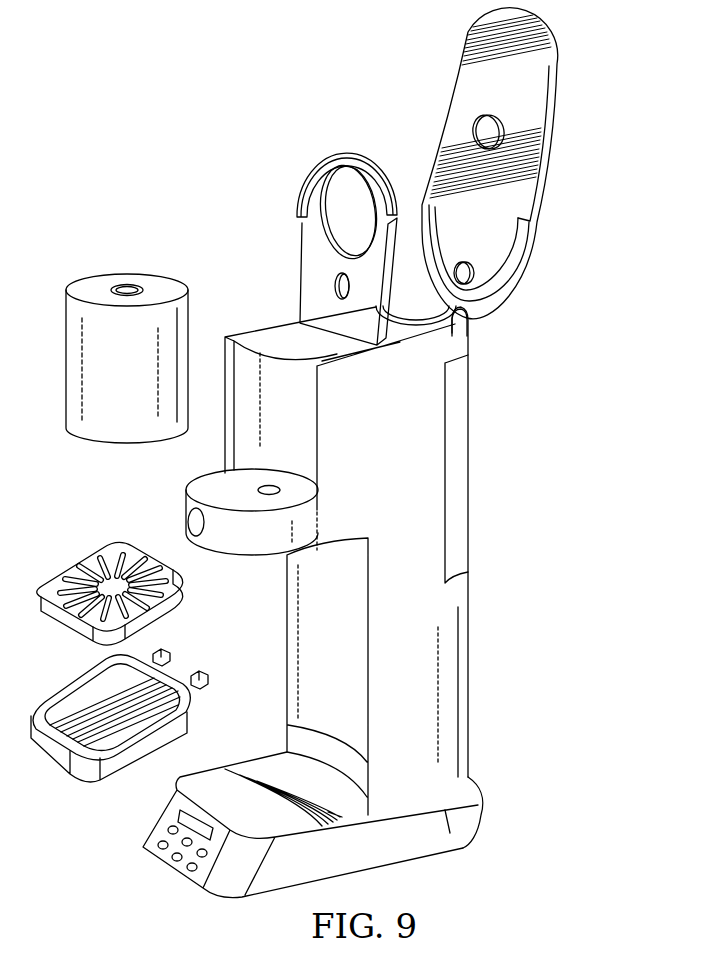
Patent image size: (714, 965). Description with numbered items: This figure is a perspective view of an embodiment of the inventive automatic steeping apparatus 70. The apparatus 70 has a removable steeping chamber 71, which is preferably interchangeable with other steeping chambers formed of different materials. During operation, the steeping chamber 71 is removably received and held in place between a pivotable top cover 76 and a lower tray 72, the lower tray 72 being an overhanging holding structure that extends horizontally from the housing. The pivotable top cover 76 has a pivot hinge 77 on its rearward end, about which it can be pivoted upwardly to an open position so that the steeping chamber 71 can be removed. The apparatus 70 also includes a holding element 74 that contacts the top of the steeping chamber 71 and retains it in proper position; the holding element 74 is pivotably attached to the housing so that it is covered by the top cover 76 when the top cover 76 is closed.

The automatic steeping apparatus 70 is at (224, 110).
The steeping chamber 71 is at (102, 283).
The lower tray 72 is at (248, 553).
The holding element 74 is at (330, 153).
The pivotable top cover 76 is at (557, 130).
The pivot hinge 77 is at (469, 340).